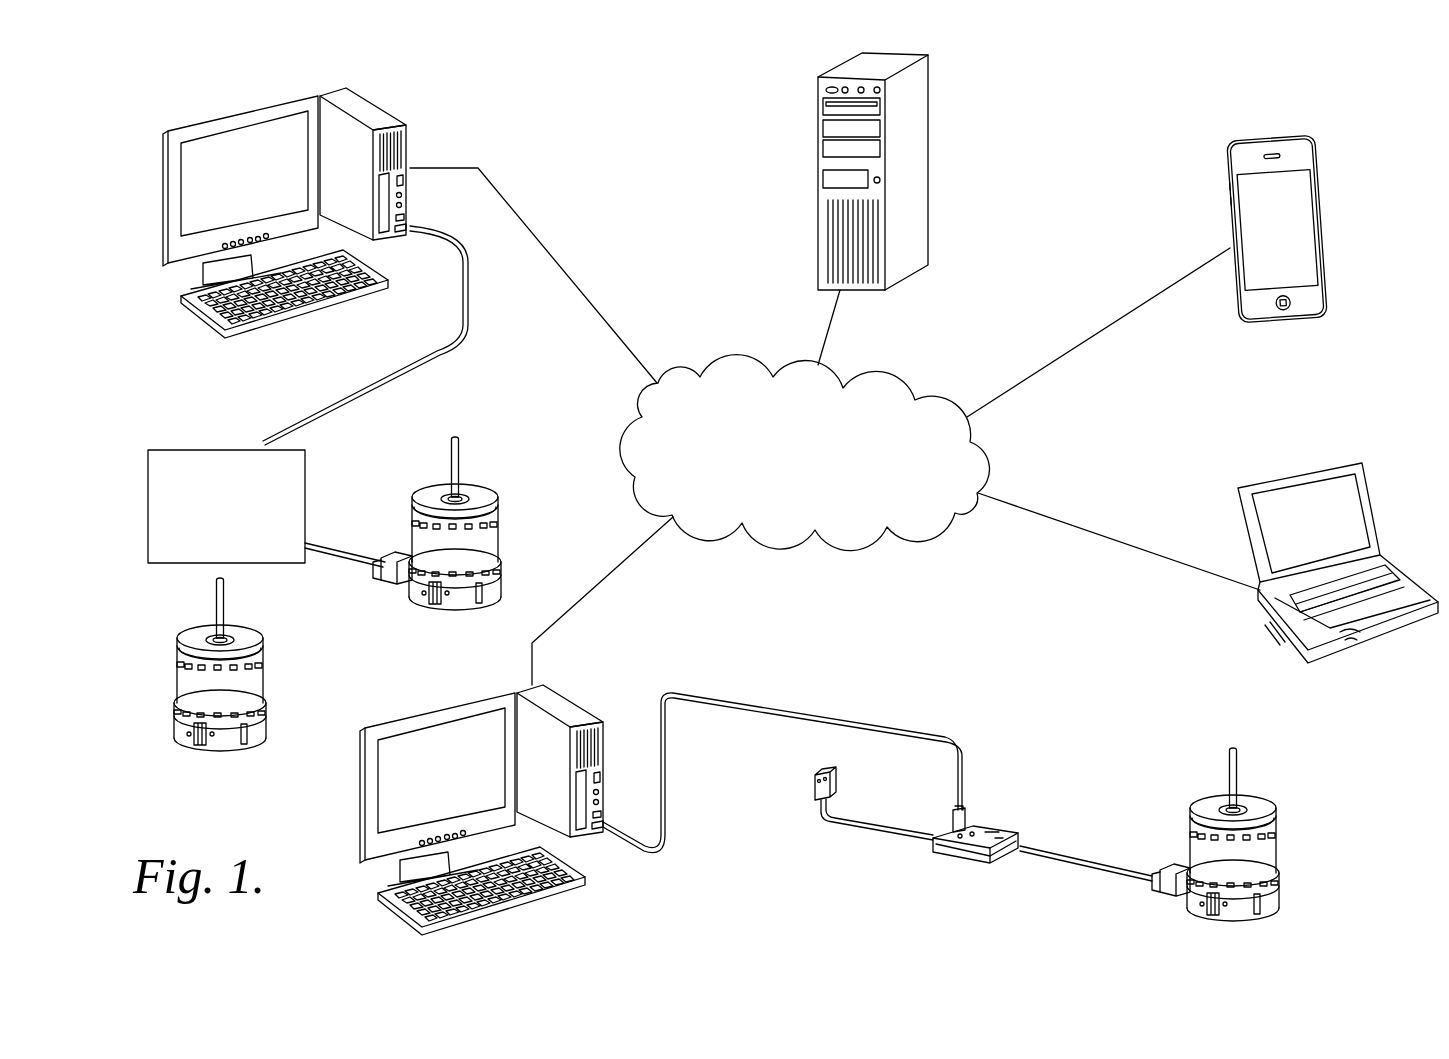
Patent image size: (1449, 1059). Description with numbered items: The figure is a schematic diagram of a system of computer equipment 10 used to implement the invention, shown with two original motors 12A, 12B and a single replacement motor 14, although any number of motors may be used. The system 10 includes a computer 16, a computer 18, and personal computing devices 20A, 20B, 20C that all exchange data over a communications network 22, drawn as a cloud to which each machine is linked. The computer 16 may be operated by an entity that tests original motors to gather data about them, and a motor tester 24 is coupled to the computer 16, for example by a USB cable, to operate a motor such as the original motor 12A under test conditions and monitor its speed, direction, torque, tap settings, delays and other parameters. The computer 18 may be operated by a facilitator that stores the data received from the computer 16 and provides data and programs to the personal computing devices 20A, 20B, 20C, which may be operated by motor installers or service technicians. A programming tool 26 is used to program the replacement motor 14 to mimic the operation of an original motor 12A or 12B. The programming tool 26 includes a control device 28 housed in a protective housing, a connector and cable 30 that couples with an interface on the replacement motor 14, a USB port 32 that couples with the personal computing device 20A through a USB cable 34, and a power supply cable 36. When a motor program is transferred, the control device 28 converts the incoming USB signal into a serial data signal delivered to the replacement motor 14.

The system of computer equipment 10 is at (1118, 130).
The original motor 12A is at (497, 460).
The original motor 12B is at (287, 664).
The replacement motor 14 is at (1290, 796).
The computer 16 is at (424, 103).
The computer 18 is at (946, 170).
The personal computing device 20A is at (572, 903).
The personal computing device 20B is at (1334, 448).
The personal computing device 20C is at (1334, 212).
The communications network 22 is at (887, 397).
The motor tester 24 is at (198, 455).
The programming tool 26 is at (1041, 816).
The control device 28 is at (950, 855).
The connector and cable 30 is at (1172, 888).
The USB port 32 is at (975, 826).
The USB cable 34 is at (880, 722).
The 48 VDL power supply cable 36 is at (818, 795).